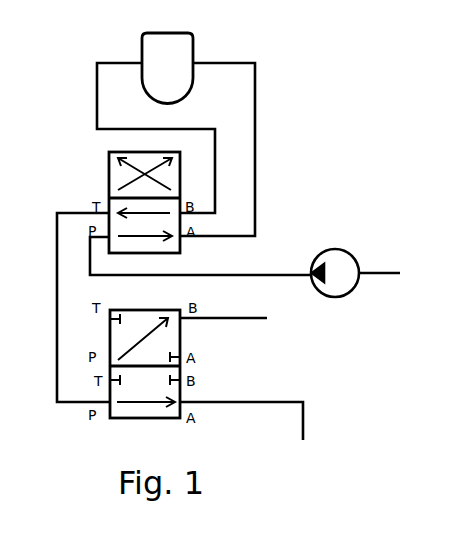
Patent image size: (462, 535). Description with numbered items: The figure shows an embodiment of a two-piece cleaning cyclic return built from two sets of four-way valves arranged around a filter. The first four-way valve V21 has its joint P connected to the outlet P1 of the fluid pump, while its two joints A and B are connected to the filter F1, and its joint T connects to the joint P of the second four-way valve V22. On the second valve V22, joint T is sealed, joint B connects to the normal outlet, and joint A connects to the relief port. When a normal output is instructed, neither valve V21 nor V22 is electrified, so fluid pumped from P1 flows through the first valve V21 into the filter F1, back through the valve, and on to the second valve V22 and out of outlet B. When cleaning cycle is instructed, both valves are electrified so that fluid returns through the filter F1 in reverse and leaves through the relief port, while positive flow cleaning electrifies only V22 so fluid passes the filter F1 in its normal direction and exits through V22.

The filter F1 is at (167, 68).
The four-way valve V21 is at (144, 192).
The four-way valve V22 is at (145, 352).
The outlet of fluid pump P1 is at (335, 273).